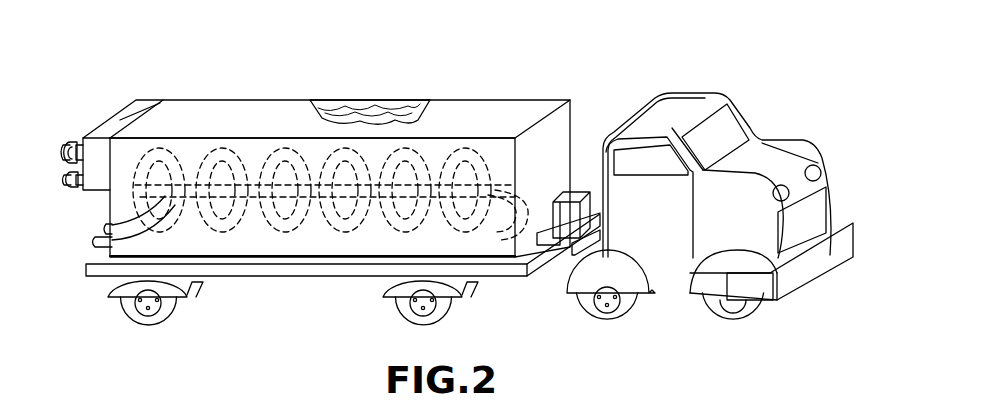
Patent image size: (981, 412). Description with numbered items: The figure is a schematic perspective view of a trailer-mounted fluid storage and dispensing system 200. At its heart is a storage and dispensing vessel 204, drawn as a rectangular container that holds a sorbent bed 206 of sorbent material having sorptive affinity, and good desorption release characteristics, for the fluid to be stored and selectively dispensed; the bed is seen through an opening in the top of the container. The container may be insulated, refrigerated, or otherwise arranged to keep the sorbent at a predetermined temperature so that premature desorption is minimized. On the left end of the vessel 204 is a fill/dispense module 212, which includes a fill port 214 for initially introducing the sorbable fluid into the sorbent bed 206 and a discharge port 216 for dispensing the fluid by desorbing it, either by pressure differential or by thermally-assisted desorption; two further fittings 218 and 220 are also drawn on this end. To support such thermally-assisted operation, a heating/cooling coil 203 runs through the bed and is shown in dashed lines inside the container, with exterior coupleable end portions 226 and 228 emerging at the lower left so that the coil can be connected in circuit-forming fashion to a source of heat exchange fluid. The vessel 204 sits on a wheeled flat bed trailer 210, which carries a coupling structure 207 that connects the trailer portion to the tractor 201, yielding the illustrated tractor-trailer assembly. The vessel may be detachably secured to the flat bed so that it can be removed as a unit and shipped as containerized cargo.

The trailer-mounted fluid storage and dispensing system 200 is at (618, 66).
The tractor 201 is at (697, 259).
The heating/cooling coil 203 is at (524, 218).
The storage and dispensing vessel 204 is at (276, 103).
The sorbent bed 206 is at (326, 110).
The coupling structure 207 is at (558, 264).
The wheeled flat bed trailer 210 is at (326, 276).
The fill/dispense module 212 is at (137, 106).
The fill port 214 is at (72, 140).
The discharge port 216 is at (56, 149).
The outlet pipe 218 is at (78, 186).
The outlet fitting 220 is at (59, 178).
The exterior coupleable end portion 226 is at (103, 229).
The exterior coupleable end portion 228 is at (94, 246).